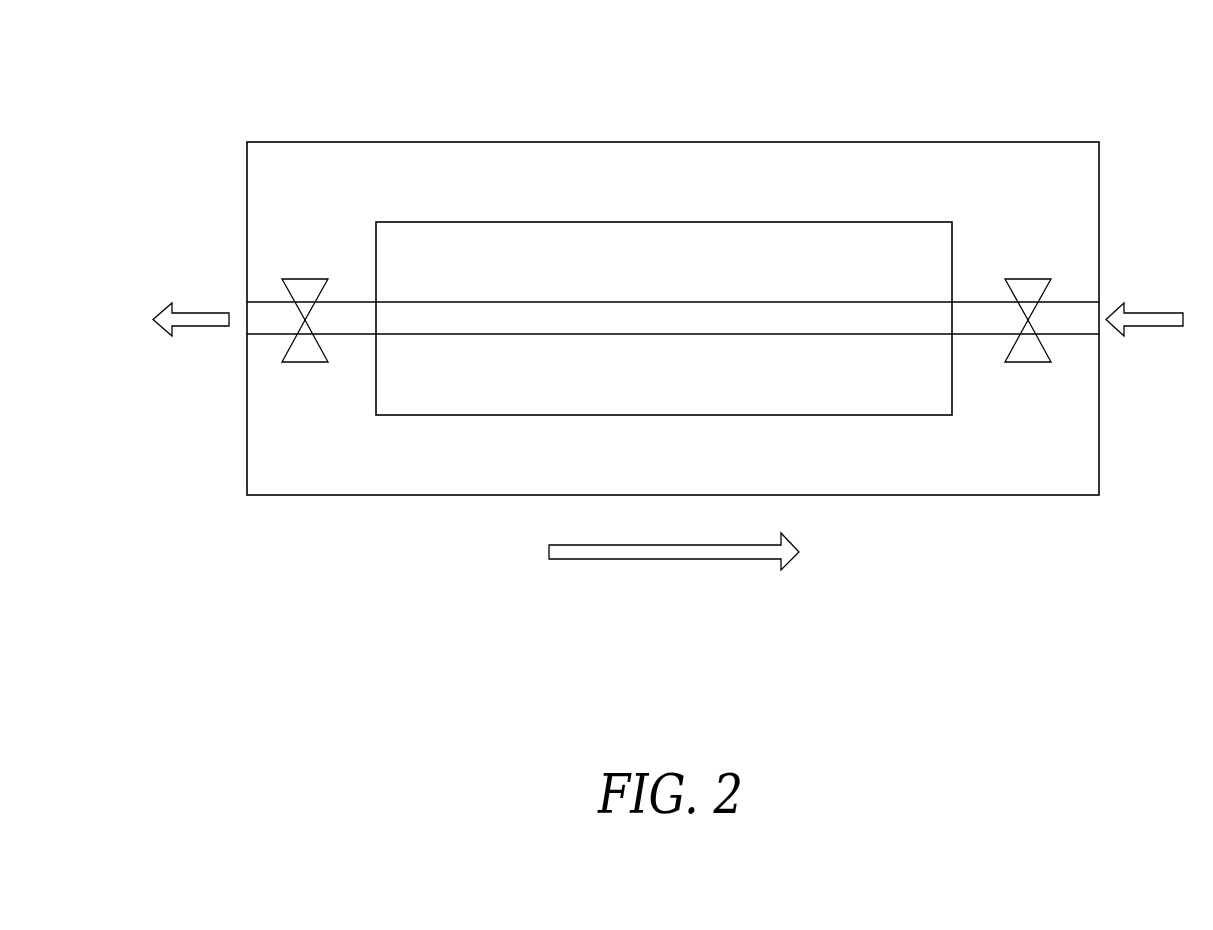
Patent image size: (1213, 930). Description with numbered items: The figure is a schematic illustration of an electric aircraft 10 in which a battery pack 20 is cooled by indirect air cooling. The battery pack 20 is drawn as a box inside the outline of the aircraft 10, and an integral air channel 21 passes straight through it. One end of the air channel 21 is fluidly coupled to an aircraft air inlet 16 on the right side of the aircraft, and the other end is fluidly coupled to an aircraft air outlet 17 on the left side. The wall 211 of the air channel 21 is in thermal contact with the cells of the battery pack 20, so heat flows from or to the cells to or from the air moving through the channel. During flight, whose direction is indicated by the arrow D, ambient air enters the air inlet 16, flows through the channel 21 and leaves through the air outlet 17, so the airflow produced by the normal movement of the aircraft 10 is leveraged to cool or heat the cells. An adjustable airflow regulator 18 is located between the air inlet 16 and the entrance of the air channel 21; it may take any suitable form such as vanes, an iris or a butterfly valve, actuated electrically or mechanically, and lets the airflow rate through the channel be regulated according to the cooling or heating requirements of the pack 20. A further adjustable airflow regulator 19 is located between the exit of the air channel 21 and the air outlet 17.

The aircraft 10 is at (1065, 183).
The battery pack 20 is at (415, 263).
The air channel 21 is at (448, 320).
The wall of the air channel 211 is at (540, 302).
The aircraft air inlet 16 is at (1100, 309).
The aircraft air outlet 17 is at (247, 310).
The adjustable airflow regulator 18 is at (1028, 363).
The further adjustable airflow regulator 19 is at (303, 363).
The direction of flight D is at (647, 560).